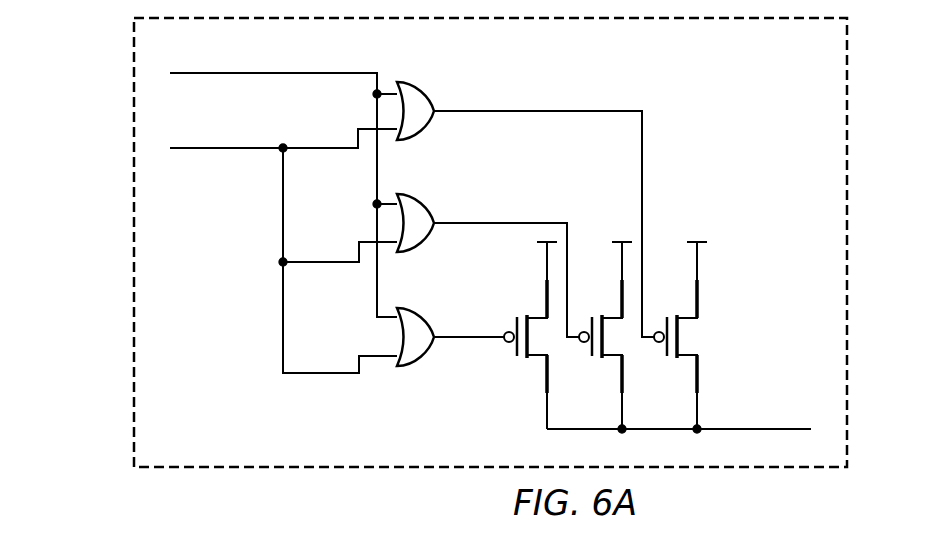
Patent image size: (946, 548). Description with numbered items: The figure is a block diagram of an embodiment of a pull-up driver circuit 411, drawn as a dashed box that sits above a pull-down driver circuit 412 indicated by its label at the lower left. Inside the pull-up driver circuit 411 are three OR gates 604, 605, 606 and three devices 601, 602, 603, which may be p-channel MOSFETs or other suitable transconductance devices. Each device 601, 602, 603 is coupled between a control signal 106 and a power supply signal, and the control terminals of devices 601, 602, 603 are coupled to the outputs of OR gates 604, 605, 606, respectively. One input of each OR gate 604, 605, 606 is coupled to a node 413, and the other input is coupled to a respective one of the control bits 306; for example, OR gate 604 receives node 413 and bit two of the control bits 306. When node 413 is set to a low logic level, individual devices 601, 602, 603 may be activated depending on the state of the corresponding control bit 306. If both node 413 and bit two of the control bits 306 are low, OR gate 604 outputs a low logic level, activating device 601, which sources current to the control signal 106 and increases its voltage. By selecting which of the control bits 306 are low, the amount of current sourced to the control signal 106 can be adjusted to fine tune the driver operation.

The pull-up driver circuit 411 is at (133, 187).
The pull-down driver circuit 412 is at (39, 499).
The node 413 is at (283, 183).
The control bits 306 is at (283, 237).
The OR gate 606 is at (425, 82).
The OR gate 605 is at (425, 193).
The OR gate 604 is at (425, 306).
The device 601 is at (523, 358).
The device 602 is at (598, 358).
The device 603 is at (673, 358).
The control signal 106 is at (679, 417).